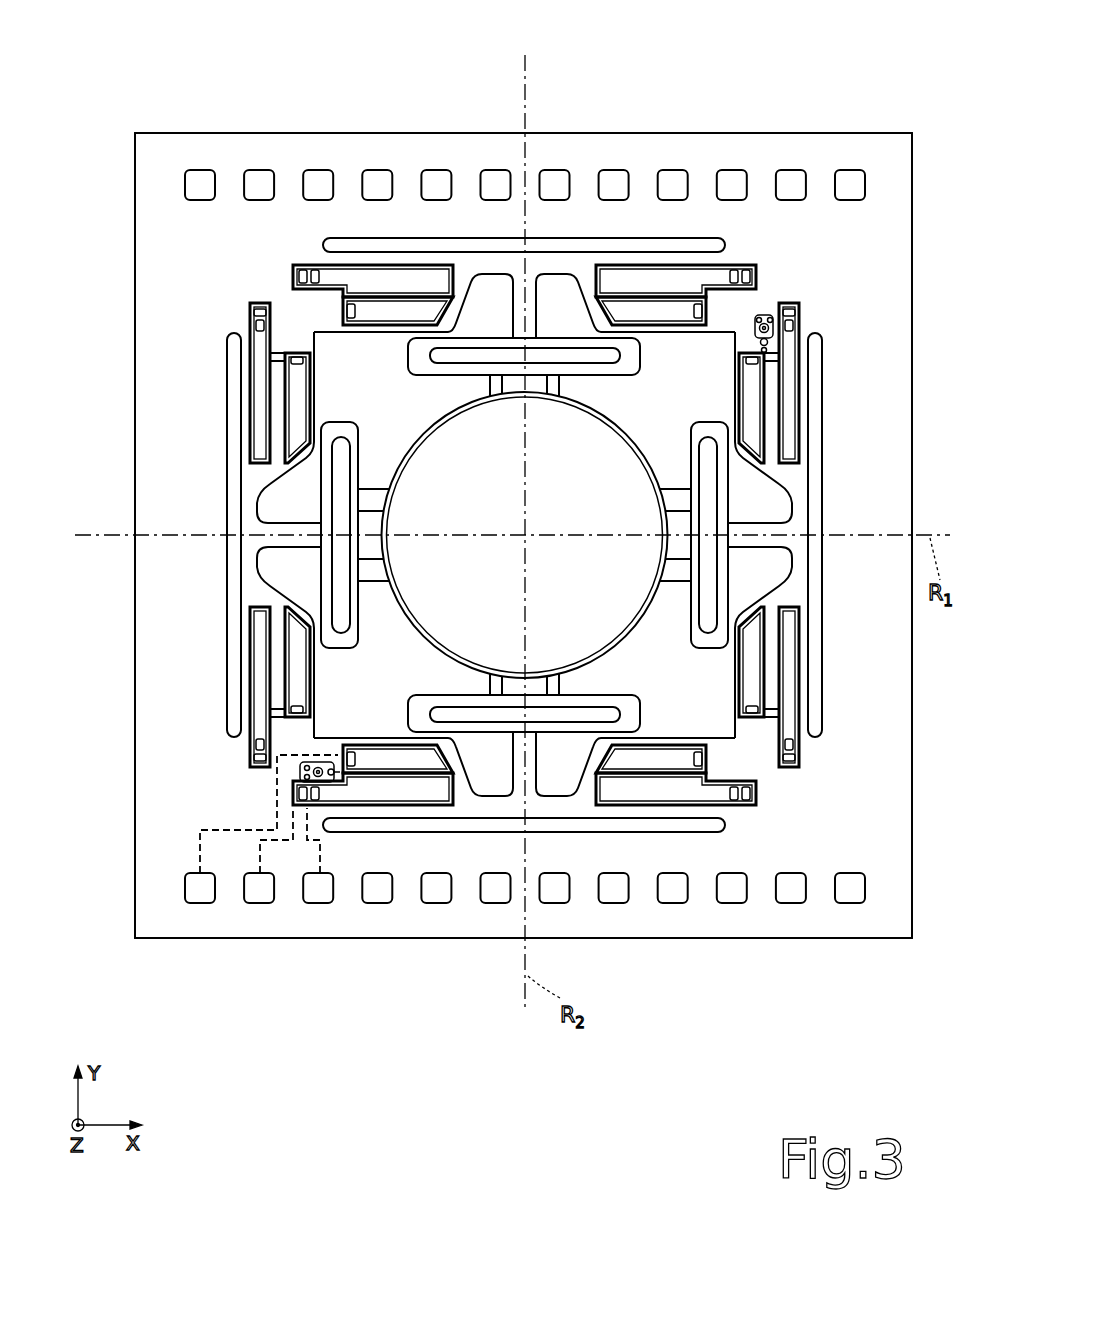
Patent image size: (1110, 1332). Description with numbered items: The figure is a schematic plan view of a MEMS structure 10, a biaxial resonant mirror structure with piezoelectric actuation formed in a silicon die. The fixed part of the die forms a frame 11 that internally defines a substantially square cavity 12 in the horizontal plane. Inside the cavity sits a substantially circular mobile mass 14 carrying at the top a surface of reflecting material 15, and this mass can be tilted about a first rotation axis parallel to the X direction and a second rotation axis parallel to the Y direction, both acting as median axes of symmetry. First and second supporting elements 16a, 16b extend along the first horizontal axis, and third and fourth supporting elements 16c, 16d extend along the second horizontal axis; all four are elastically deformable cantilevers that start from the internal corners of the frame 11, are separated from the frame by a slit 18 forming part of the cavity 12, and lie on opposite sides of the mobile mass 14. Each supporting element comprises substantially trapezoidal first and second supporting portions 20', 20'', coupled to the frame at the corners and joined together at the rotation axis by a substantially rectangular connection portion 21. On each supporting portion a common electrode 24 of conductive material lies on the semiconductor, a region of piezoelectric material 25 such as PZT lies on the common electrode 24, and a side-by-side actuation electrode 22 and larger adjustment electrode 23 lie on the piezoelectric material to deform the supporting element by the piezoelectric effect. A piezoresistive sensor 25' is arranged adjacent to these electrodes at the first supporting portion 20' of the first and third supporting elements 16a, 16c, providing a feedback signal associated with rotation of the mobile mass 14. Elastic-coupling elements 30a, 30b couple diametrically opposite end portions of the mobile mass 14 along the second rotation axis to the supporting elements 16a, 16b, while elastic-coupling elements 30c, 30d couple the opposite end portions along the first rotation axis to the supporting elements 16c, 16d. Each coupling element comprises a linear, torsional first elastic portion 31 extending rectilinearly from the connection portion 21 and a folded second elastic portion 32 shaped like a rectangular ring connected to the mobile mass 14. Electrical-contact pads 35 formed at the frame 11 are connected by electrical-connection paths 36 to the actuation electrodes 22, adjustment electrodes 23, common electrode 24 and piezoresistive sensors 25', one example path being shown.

The MEMS structure 10 is at (838, 88).
The frame 11 is at (140, 750).
The cavity 12 is at (733, 332).
The mobile mass 14 is at (620, 650).
The surface of reflecting material 15 is at (581, 609).
The first supporting element 16a is at (511, 806).
The second supporting element 16b is at (511, 264).
The third supporting element 16c is at (770, 530).
The fourth supporting element 16d is at (253, 540).
The slit 18 is at (812, 557).
The first supporting portion 20' is at (490, 534).
The second supporting portion 20'' is at (491, 534).
The connection portion 21 is at (533, 268).
The actuation electrode 22 is at (373, 315).
The adjustment electrode 23 is at (328, 272).
The common electrode 24 is at (291, 272).
The region of piezoelectric material 25 is at (271, 281).
The piezoresistive sensor 25' is at (581, 521).
The first elastic-coupling element 30a is at (533, 687).
The second elastic-coupling element 30b is at (533, 378).
The third elastic-coupling element 30c is at (685, 547).
The fourth elastic-coupling element 30d is at (363, 546).
The first elastic portion 31 is at (523, 318).
The second elastic portion 32 is at (457, 368).
The electrical-contact pads 35 is at (260, 900).
The electrical-connection paths 36 is at (200, 860).